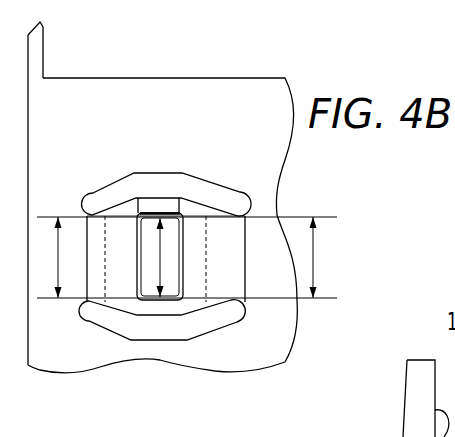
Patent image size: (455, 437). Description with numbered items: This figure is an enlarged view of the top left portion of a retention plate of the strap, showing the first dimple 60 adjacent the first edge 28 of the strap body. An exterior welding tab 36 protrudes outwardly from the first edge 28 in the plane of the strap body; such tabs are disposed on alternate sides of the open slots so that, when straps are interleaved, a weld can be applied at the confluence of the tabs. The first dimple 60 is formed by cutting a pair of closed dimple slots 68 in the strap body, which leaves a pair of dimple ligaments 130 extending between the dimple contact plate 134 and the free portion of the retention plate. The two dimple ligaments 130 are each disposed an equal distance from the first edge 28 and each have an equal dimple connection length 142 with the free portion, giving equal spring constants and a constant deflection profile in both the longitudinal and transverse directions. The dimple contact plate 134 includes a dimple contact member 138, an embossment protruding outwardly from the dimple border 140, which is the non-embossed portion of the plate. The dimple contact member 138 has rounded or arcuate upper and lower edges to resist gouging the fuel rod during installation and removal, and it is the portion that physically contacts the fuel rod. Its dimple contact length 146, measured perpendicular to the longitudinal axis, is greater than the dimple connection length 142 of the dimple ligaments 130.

The first edge 28 is at (106, 78).
The exterior welding tab 36 is at (44, 53).
The first dimple 60 is at (257, 239).
The closed dimple slot 68 is at (98, 195).
The dimple ligament 130 is at (100, 313).
The dimple contact plate 134 is at (157, 213).
The dimple contact member 138 is at (150, 213).
The dimple border 140 is at (164, 205).
The dimple connection length 142 is at (57, 255).
The dimple contact length 146 is at (152, 246).